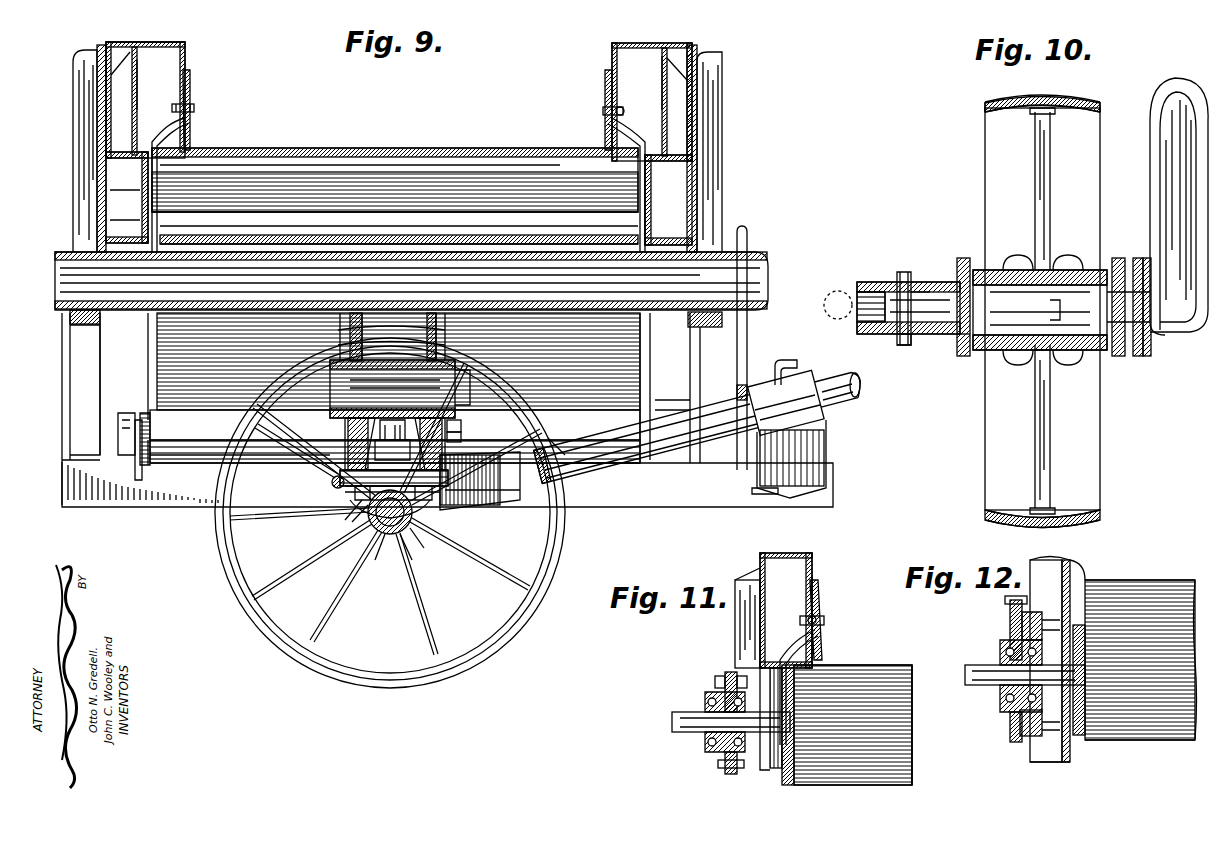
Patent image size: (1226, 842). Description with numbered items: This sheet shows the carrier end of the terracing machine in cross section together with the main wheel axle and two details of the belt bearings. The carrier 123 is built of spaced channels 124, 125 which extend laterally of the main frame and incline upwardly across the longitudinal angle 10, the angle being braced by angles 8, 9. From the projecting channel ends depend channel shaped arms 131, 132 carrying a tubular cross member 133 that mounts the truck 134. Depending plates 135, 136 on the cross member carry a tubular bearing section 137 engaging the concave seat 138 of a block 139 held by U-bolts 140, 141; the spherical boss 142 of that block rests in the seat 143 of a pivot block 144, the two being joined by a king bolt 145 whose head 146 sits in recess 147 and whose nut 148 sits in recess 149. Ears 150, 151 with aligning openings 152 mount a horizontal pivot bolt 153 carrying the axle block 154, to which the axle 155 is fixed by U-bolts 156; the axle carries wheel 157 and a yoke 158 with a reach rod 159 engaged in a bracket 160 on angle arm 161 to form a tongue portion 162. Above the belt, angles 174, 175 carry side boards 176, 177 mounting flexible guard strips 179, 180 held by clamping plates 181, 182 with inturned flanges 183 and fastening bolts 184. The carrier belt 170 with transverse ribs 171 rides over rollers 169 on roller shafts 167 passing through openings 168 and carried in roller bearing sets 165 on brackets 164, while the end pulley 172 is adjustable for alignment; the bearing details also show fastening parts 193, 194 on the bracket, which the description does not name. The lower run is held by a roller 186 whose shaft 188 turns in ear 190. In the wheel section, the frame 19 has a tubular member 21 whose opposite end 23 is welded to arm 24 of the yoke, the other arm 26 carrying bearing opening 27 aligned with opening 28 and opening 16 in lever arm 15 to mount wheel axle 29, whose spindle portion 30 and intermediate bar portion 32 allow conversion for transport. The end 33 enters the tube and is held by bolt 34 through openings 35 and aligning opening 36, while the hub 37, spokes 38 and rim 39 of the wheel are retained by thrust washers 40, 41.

In FIG. 9, the angle 8 is at (715, 358).
In FIG. 9, the angle 9 is at (66, 407).
In FIG. 9, the longitudinal angle 10 is at (620, 508).
In FIG. 10, the lever arm 15 is at (1147, 356).
In FIG. 10, the opening 16 is at (1170, 332).
In FIG. 12, the frame 19 is at (1030, 590).
In FIG. 10, the tubular member 21 is at (886, 282).
In FIG. 10, the opposite end 23 is at (922, 334).
In FIG. 10, the arm 24 is at (966, 258).
In FIG. 10, the other arm 26 is at (1116, 258).
In FIG. 10, the bearing opening 27 is at (1128, 356).
In FIG. 10, the opening 28 is at (958, 345).
In FIG. 10, the wheel axle 29 is at (1020, 352).
In FIG. 10, the spindle portion 30 is at (1058, 345).
In FIG. 10, the intermediate bar portion 32 is at (1162, 204).
In FIG. 10, the end 33 is at (860, 334).
In FIG. 10, the bolt 34 is at (916, 274).
In FIG. 10, the openings 35 is at (920, 284).
In FIG. 10, the aligning opening 36 is at (857, 305).
In FIG. 10, the hub 37 is at (1028, 268).
In FIG. 10, the spokes 38 is at (1051, 204).
In FIG. 10, the rim 39 is at (986, 106).
In FIG. 10, the thrust washer 40 is at (1000, 270).
In FIG. 10, the thrust washer 41 is at (1084, 270).
In FIG. 9, the carrier 123 is at (192, 150).
In FIG. 9, the channel 124 is at (655, 178).
In FIG. 9, the channel 125 is at (108, 216).
In FIG. 11, the channel 125 is at (778, 770).
In FIG. 12, the channel 125 is at (1030, 762).
In FIG. 9, the channel shaped arm 131 is at (720, 136).
In FIG. 9, the channel shaped arm 132 is at (80, 166).
In FIG. 9, the tubular cross member 133 is at (62, 316).
In FIG. 9, the truck 134 is at (368, 528).
In FIG. 9, the depending plate 135 is at (455, 312).
In FIG. 9, the depending plate 136 is at (392, 312).
In FIG. 9, the tubular bearing section 137 is at (344, 422).
In FIG. 9, the concave seat 138 is at (462, 430).
In FIG. 9, the block 139 is at (460, 440).
In FIG. 9, the U-bolt 140 is at (450, 340).
In FIG. 9, the U-bolt 141 is at (352, 320).
In FIG. 9, the spherical boss 142 is at (320, 462).
In FIG. 9, the seat 143 is at (445, 455).
In FIG. 9, the pivot block 144 is at (470, 478).
In FIG. 9, the king bolt 145 is at (414, 404).
In FIG. 9, the head 146 is at (372, 404).
In FIG. 9, the recess 147 is at (420, 406).
In FIG. 9, the nut 148 is at (332, 484).
In FIG. 9, the recess 149 is at (505, 505).
In FIG. 9, the ear 150 is at (440, 520).
In FIG. 9, the ear 151 is at (350, 520).
In FIG. 9, the aligning openings 152 is at (445, 505).
In FIG. 9, the horizontal pivot bolt 153 is at (345, 492).
In FIG. 9, the axle block 154 is at (418, 540).
In FIG. 9, the axle 155 is at (420, 556).
In FIG. 9, the U-bolts 156 is at (382, 552).
In FIG. 9, the wheel 157 is at (514, 635).
In FIG. 9, the yoke 158 is at (548, 505).
In FIG. 9, the reach rod 159 is at (676, 446).
In FIG. 9, the bracket 160 is at (818, 430).
In FIG. 9, the angle arm 161 is at (740, 480).
In FIG. 9, the tongue portion 162 is at (857, 398).
In FIG. 11, the bracket 164 is at (728, 672).
In FIG. 11, the roller bearing set 165 is at (704, 700).
In FIG. 9, the roller shaft 167 is at (145, 178).
In FIG. 11, the opening 168 is at (724, 776).
In FIG. 9, the roller 169 is at (375, 140).
In FIG. 9, the carrier belt 170 is at (445, 140).
In FIG. 11, the carrier belt 170 is at (906, 682).
In FIG. 12, the carrier belt 170 is at (1146, 570).
In FIG. 9, the transverse ribs 171 is at (206, 410).
In FIG. 11, the transverse ribs 171 is at (908, 666).
In FIG. 12, the transverse ribs 171 is at (1183, 582).
In FIG. 11, the end pulley 172 is at (798, 672).
In FIG. 12, the end pulley 172 is at (1079, 736).
In FIG. 9, the angle 174 is at (662, 86).
In FIG. 9, the angle 175 is at (133, 90).
In FIG. 11, the angle 175 is at (736, 628).
In FIG. 9, the side board 176 is at (612, 60).
In FIG. 9, the side board 177 is at (186, 60).
In FIG. 11, the side board 177 is at (814, 564).
In FIG. 9, the guard strip 179 is at (606, 134).
In FIG. 9, the guard strip 180 is at (194, 108).
In FIG. 11, the guard strip 180 is at (820, 650).
In FIG. 9, the clamping plate 181 is at (602, 116).
In FIG. 9, the clamping plate 182 is at (191, 80).
In FIG. 11, the clamping plate 182 is at (822, 600).
In FIG. 9, the inturned flange 183 is at (604, 74).
In FIG. 11, the inturned flange 183 is at (822, 584).
In FIG. 9, the fastening bolt 184 is at (625, 112).
In FIG. 11, the fastening bolt 184 is at (826, 620).
In FIG. 9, the roller 186 is at (180, 462).
In FIG. 9, the shaft 188 is at (146, 467).
In FIG. 9, the ear 190 is at (138, 482).
In FIG. 11, the nut 193 is at (716, 678).
In FIG. 11, the nut 194 is at (712, 756).